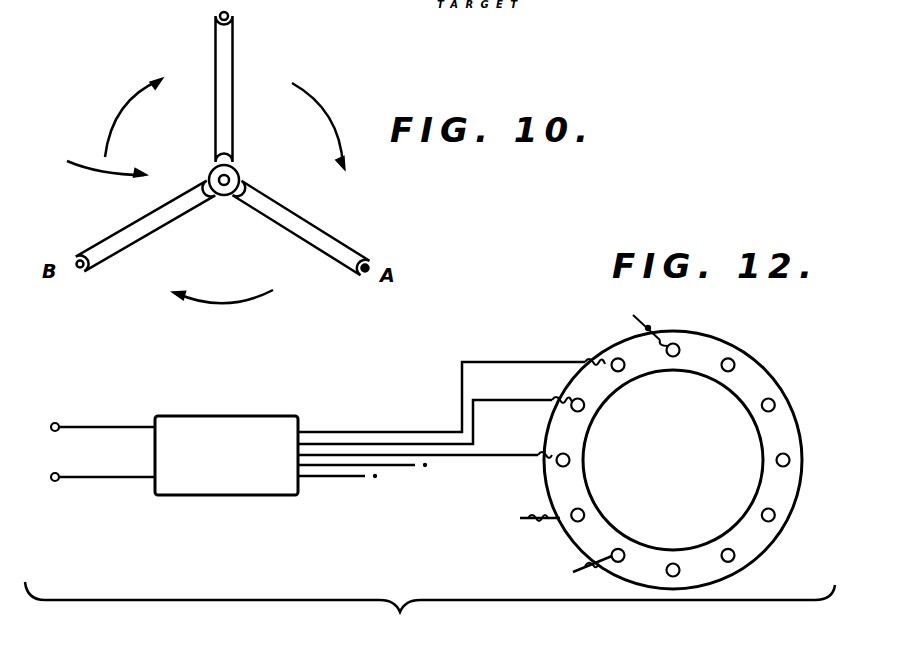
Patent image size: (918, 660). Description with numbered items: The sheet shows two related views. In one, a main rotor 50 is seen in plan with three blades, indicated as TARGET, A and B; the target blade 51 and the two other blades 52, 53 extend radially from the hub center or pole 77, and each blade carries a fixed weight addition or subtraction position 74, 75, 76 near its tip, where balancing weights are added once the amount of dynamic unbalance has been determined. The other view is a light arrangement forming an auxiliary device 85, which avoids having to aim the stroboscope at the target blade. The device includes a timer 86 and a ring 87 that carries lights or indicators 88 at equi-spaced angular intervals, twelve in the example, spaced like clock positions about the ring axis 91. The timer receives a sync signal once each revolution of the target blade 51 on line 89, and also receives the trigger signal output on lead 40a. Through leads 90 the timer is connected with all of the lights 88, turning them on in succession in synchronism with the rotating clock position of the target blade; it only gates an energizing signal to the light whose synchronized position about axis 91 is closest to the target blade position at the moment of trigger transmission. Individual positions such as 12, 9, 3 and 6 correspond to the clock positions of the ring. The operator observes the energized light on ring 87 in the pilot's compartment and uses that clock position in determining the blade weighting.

In FIG. 10, the main rotor 50 is at (91, 161).
In FIG. 10, the target blade 51 is at (232, 87).
In FIG. 10, the second arm 52 is at (295, 217).
In FIG. 10, the third arm 53 is at (150, 228).
In FIG. 10, the weight position 74 is at (229, 16).
In FIG. 10, the weight position 75 is at (362, 274).
In FIG. 10, the weight position 76 is at (83, 271).
In FIG. 10, the center or pole 77 is at (238, 172).
In FIG. 12, the auxiliary device 85 is at (430, 609).
In FIG. 12, the timer 86 is at (213, 484).
In FIG. 12, the ring 87 is at (787, 426).
In FIG. 12, the lights or indicators 88 is at (735, 362).
In FIG. 12, the line 89 is at (93, 427).
In FIG. 12, the lead 40a is at (75, 482).
In FIG. 12, the leads 90 is at (485, 348).
In FIG. 12, the axis 91 is at (671, 460).
In FIG. 12, the hole 12 is at (672, 334).
In FIG. 12, the hole 9 is at (571, 457).
In FIG. 12, the hole 3 is at (796, 458).
In FIG. 12, the hole 6 is at (672, 578).